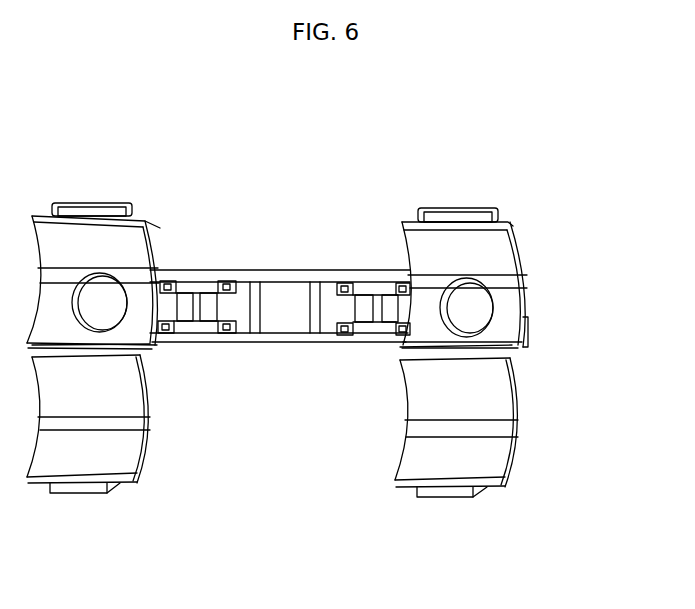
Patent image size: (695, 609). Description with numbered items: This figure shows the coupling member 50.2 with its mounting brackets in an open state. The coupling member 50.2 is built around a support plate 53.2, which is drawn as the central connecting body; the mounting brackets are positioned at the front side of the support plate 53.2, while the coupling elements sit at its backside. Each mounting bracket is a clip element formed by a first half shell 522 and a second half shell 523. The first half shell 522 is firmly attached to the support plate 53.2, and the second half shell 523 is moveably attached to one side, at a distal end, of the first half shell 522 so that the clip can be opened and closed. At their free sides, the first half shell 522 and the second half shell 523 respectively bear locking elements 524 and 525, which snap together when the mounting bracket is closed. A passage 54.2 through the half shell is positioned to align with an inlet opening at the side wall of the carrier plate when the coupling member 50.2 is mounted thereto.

The coupling member 50.2 is at (532, 161).
The support plate 53.2 is at (281, 271).
The first half shell 522 is at (497, 240).
The second half shell 523 is at (497, 400).
The locking element 524 is at (438, 205).
The locking element 525 is at (443, 500).
The passage 54.2 is at (488, 297).